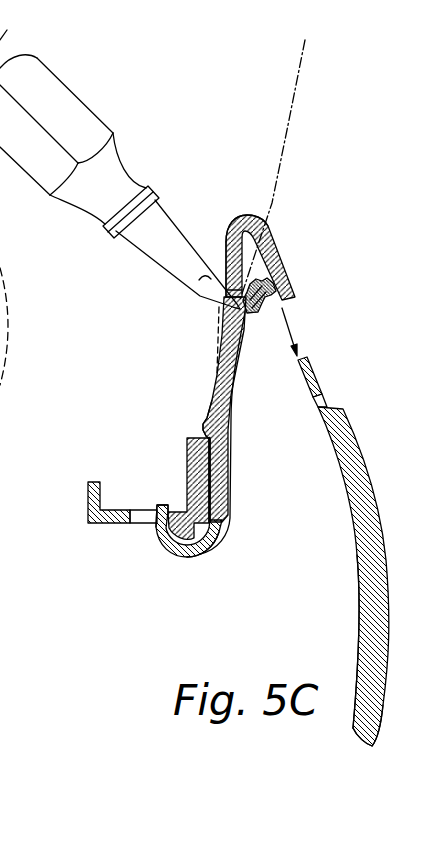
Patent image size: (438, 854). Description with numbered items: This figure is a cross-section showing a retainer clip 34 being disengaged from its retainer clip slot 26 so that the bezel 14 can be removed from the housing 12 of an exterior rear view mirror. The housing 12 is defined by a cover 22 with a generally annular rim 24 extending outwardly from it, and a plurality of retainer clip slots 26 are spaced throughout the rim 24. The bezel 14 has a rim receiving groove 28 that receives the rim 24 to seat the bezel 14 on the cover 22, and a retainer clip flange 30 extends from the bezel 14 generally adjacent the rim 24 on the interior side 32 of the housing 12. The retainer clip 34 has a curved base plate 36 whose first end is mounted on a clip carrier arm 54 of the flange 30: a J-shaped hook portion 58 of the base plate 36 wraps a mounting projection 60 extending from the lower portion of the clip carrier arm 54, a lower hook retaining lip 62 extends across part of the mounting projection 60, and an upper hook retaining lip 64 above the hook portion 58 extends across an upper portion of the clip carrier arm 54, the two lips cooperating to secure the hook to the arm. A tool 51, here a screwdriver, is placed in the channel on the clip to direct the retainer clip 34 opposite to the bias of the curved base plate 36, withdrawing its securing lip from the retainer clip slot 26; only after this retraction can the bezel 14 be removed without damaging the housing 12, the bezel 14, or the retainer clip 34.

The tool 51 is at (70, 100).
The bezel 14 is at (243, 198).
The rim receiving groove 28 is at (258, 241).
The retainer clip flange 30 is at (225, 245).
The retainer clip 34 is at (213, 390).
The curved base plate 36 is at (215, 423).
The upper hook retaining lip 64 is at (204, 425).
The clip carrier arm 54 is at (188, 441).
The J-shaped hook portion 58 is at (163, 537).
The lower hook retaining lip 62 is at (160, 505).
The mounting projection 60 is at (209, 543).
The rim 24 is at (310, 372).
The retainer clip slot 26 is at (322, 398).
The cover 22 is at (360, 500).
The interior side 32 is at (359, 593).
The housing 12 is at (385, 716).